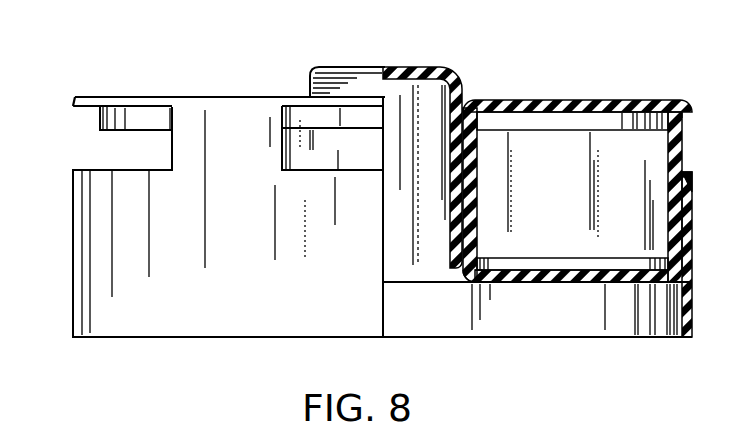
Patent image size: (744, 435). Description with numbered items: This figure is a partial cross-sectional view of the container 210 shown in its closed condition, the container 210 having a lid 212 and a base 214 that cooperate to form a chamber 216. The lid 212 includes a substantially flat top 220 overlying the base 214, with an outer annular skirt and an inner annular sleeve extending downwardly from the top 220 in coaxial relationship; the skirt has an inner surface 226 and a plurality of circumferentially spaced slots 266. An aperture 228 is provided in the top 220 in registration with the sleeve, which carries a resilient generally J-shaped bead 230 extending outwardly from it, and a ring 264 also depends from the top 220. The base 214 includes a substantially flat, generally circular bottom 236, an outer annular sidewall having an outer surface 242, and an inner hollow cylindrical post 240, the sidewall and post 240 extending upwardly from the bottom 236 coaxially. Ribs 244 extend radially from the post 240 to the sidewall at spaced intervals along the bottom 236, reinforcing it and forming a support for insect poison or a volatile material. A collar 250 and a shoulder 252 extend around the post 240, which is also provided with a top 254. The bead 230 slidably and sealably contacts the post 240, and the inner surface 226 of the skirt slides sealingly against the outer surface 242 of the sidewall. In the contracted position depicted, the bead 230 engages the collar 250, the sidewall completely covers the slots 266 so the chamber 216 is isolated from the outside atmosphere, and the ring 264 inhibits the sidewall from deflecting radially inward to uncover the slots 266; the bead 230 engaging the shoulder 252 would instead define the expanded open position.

The container 210 is at (253, 71).
The lid 212 is at (302, 79).
The base 214 is at (437, 338).
The chamber 216 is at (558, 162).
The top 220 is at (195, 97).
The inner surface 226 is at (668, 165).
The aperture 228 is at (463, 100).
The bead 230 is at (461, 267).
The bottom 236 is at (620, 270).
The post 240 is at (424, 266).
The outer surface 242 is at (682, 222).
The ribs 244 is at (542, 262).
The collar 250 is at (474, 275).
The shoulder 252 is at (461, 187).
The top 254 is at (427, 67).
The ring 264 is at (622, 122).
The slots 266 is at (105, 140).